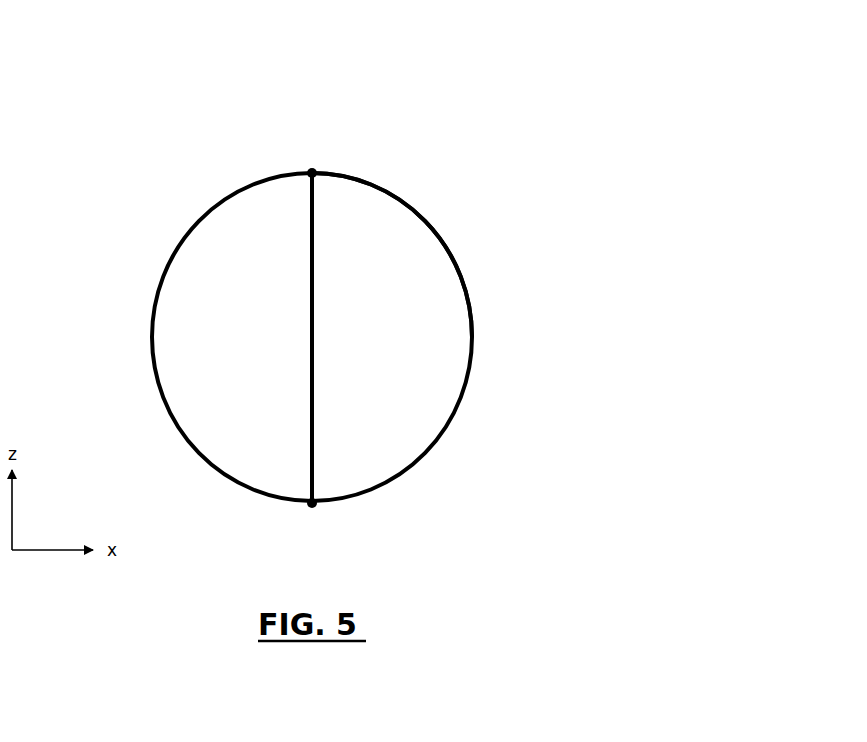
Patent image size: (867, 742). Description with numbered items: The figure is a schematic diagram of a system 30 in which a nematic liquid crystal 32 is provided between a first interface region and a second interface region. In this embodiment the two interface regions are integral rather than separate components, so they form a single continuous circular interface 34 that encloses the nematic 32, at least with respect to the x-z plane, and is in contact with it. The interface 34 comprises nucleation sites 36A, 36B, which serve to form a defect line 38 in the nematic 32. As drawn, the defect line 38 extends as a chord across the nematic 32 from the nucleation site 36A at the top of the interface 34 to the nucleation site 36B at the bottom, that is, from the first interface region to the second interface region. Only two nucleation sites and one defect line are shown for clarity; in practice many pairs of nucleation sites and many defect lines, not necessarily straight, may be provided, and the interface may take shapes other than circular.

The system 30 is at (102, 70).
The nematic liquid crystal 32 is at (201, 256).
The interface 34 is at (435, 222).
The nucleation site 36A is at (313, 170).
The nucleation site 36B is at (313, 508).
The defect line 38 is at (314, 225).